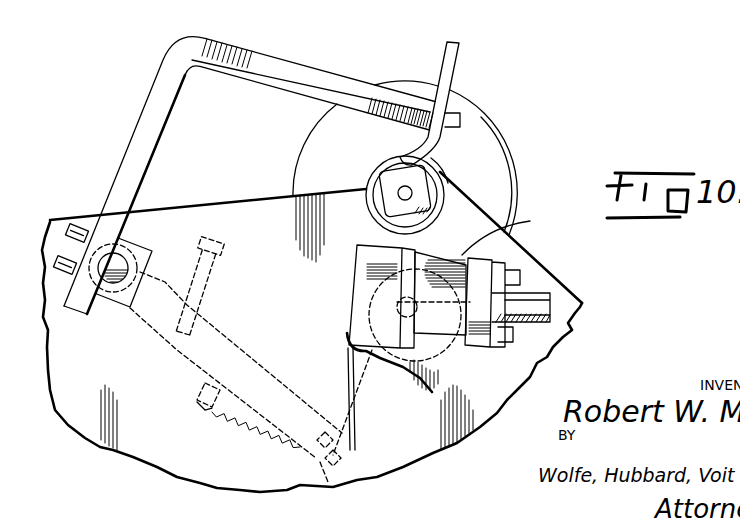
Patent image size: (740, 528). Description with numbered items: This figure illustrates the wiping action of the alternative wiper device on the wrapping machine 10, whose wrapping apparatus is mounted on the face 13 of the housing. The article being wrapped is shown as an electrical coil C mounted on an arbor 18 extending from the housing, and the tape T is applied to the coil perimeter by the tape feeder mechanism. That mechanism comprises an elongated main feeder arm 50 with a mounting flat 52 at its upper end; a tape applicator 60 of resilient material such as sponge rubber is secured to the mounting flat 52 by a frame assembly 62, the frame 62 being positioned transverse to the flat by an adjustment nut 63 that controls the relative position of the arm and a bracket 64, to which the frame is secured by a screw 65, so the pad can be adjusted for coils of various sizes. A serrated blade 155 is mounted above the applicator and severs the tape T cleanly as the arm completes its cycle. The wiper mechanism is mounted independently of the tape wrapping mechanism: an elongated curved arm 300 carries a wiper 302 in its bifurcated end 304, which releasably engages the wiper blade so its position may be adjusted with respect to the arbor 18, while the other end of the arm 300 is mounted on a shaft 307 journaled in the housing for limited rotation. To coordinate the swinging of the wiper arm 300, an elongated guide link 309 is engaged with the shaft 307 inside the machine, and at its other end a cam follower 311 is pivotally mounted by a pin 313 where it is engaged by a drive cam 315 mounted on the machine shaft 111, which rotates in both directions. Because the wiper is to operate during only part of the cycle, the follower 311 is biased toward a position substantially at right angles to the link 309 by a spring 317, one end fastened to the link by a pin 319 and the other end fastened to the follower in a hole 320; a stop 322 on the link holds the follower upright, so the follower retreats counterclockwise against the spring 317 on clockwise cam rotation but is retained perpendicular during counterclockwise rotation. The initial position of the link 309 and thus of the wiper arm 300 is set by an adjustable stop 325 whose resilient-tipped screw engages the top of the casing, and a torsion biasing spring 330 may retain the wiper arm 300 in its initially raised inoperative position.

The machine 10 is at (211, 194).
The face 13 is at (262, 183).
The arbor 18 is at (418, 188).
The electrical coil C is at (378, 176).
The tape T is at (352, 275).
The main feeder arm 50 is at (420, 383).
The mounting flat 52 is at (435, 257).
The tape applicator 60 is at (362, 323).
The frame assembly 62 is at (390, 334).
The adjustment nut 63 is at (545, 304).
The bracket 64 is at (507, 234).
The screw 65 is at (500, 300).
The shaft 111 is at (353, 301).
The serrated blade 155 is at (362, 246).
The elongated curved arm 300 is at (290, 70).
The wiper 302 is at (462, 64).
The bifurcated end 304 is at (452, 112).
The shaft 307 is at (118, 258).
The elongated guide link 309 is at (150, 336).
The cam follower 311 is at (358, 412).
The pin 313 is at (325, 478).
The drive cam 315 is at (450, 360).
The spring 317 is at (243, 437).
The pin 319 is at (197, 403).
The hole 320 is at (310, 463).
The stop 322 is at (352, 450).
The adjustable stop 325 is at (197, 283).
The torsion biasing spring 330 is at (147, 256).